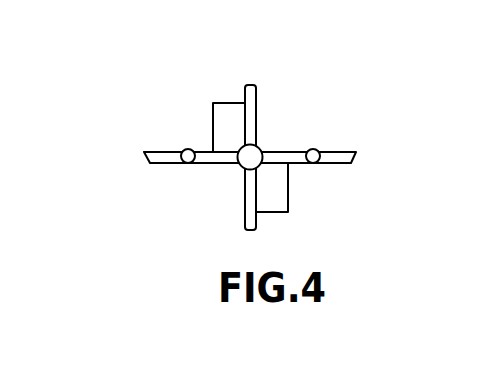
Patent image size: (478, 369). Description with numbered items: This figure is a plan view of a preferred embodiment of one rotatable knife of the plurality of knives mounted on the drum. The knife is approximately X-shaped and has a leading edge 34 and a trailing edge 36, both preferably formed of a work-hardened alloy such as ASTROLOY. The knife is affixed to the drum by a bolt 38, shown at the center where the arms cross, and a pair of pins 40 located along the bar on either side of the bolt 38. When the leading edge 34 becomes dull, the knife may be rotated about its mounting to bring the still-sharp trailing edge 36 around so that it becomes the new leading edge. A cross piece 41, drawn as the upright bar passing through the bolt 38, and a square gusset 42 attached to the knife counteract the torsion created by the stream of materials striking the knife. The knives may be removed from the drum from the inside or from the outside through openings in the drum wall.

The leading edge 34 is at (357, 156).
The trailing edge 36 is at (146, 156).
The bolt 38 is at (242, 168).
The pins 40 is at (190, 163).
The cross piece 41 is at (252, 90).
The square gusset 42 is at (224, 103).